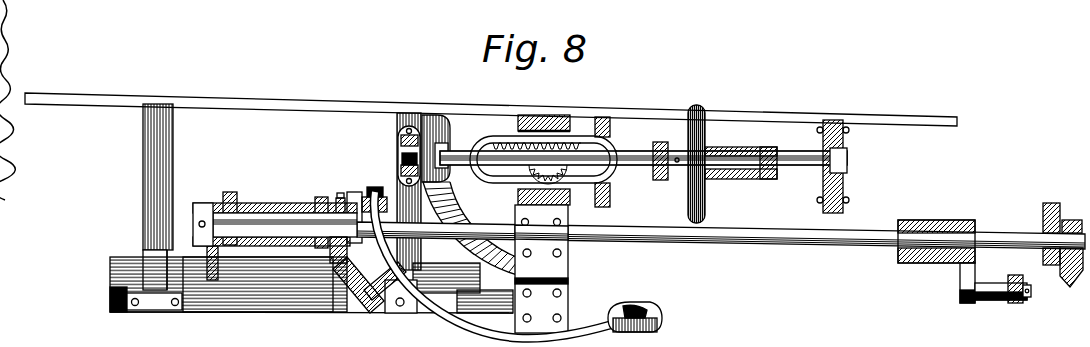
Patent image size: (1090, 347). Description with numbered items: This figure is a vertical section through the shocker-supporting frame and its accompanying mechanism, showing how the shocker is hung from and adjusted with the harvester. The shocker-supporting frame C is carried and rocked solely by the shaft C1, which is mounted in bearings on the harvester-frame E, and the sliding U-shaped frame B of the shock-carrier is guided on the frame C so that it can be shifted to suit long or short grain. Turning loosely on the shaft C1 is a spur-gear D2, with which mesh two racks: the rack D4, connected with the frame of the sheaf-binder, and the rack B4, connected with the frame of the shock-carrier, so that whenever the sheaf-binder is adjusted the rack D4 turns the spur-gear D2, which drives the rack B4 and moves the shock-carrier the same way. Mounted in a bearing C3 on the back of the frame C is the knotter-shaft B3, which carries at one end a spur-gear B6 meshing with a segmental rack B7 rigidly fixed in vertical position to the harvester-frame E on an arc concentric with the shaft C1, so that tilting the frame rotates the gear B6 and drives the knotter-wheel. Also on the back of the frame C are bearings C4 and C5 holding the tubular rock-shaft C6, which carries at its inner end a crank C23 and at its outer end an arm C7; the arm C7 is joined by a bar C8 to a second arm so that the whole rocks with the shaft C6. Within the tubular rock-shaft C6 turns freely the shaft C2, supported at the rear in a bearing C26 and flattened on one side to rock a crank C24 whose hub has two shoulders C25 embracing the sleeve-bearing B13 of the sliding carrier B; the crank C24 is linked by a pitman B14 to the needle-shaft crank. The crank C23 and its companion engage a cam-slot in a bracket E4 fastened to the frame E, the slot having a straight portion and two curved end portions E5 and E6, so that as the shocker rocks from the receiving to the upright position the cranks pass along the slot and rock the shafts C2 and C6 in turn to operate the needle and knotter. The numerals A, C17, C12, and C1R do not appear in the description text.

The sliding U-shaped frame of the shock-carrier B is at (143, 160).
The bed plate A is at (213, 302).
The tubular sleeve on shaft C17 is at (203, 204).
The bearing C4 is at (233, 199).
The tubular rock-shaft C6 is at (314, 201).
The bearing C5 is at (340, 196).
The upper laterally-curved rear end of the cam-slot E6 is at (368, 193).
The arm C7 is at (220, 249).
The bar C8 is at (398, 140).
The pin C12 is at (383, 188).
The spur-gear B6 is at (427, 140).
The spur-gear D2 is at (543, 143).
The shaft C1 is at (563, 117).
The rack B4 is at (612, 134).
The rack D4 is at (612, 177).
The knotter-shaft B3 is at (800, 170).
The segmental rack B7 is at (703, 200).
The harvester-frame E is at (568, 282).
The bracket E4 is at (470, 324).
The curved end portion of the cam-slot E5 is at (656, 315).
The shocker-supporting frame C is at (850, 192).
The bearing C3 is at (850, 153).
The shaft C2 is at (723, 236).
The shoulders C25 is at (980, 222).
The bearing C26 is at (1043, 213).
The sleeve-bearing B13 is at (925, 258).
The crank C24 is at (958, 285).
The pitman B14 is at (1018, 304).
The crank C23 is at (383, 297).
The flange C1R is at (1073, 280).